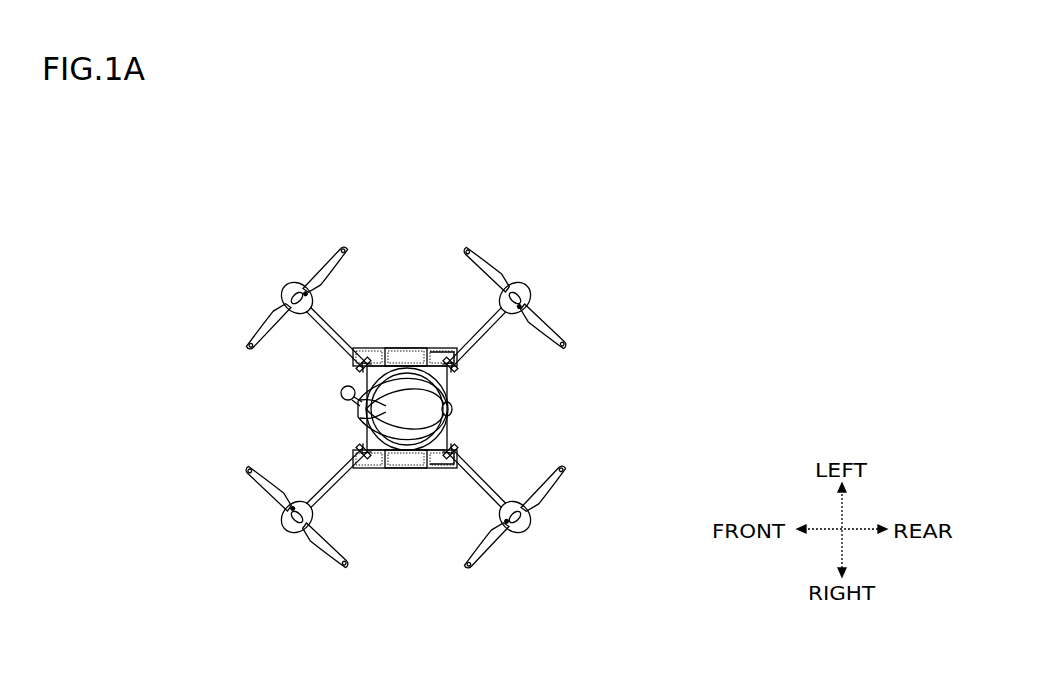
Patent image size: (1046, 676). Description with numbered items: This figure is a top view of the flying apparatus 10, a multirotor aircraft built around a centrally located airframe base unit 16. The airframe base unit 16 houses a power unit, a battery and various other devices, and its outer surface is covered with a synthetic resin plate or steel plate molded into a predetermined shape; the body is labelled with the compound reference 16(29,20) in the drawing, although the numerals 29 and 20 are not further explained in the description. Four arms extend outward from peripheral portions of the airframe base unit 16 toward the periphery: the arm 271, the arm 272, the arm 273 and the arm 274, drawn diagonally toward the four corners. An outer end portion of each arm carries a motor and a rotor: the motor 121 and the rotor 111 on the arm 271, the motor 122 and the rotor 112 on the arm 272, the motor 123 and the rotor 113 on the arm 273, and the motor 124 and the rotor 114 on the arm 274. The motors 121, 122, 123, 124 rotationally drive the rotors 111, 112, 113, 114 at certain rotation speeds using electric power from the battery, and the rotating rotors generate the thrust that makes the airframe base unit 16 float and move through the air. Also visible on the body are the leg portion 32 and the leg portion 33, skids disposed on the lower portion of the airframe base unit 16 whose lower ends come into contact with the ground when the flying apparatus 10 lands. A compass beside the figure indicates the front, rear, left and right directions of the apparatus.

The flying apparatus 10 is at (400, 207).
The airframe base unit 16 is at (379, 348).
The housing 29 is at (405, 408).
The body frame 20 is at (406, 408).
The leg portion 33 is at (441, 348).
The leg portion 32 is at (437, 469).
The arm 271 is at (307, 493).
The arm 272 is at (331, 335).
The arm 273 is at (487, 349).
The arm 274 is at (490, 480).
The motor 121 is at (284, 526).
The motor 122 is at (284, 291).
The motor 123 is at (528, 291).
The motor 124 is at (528, 526).
The rotor 111 is at (236, 470).
The rotor 112 is at (236, 349).
The rotor 113 is at (578, 348).
The rotor 114 is at (578, 470).